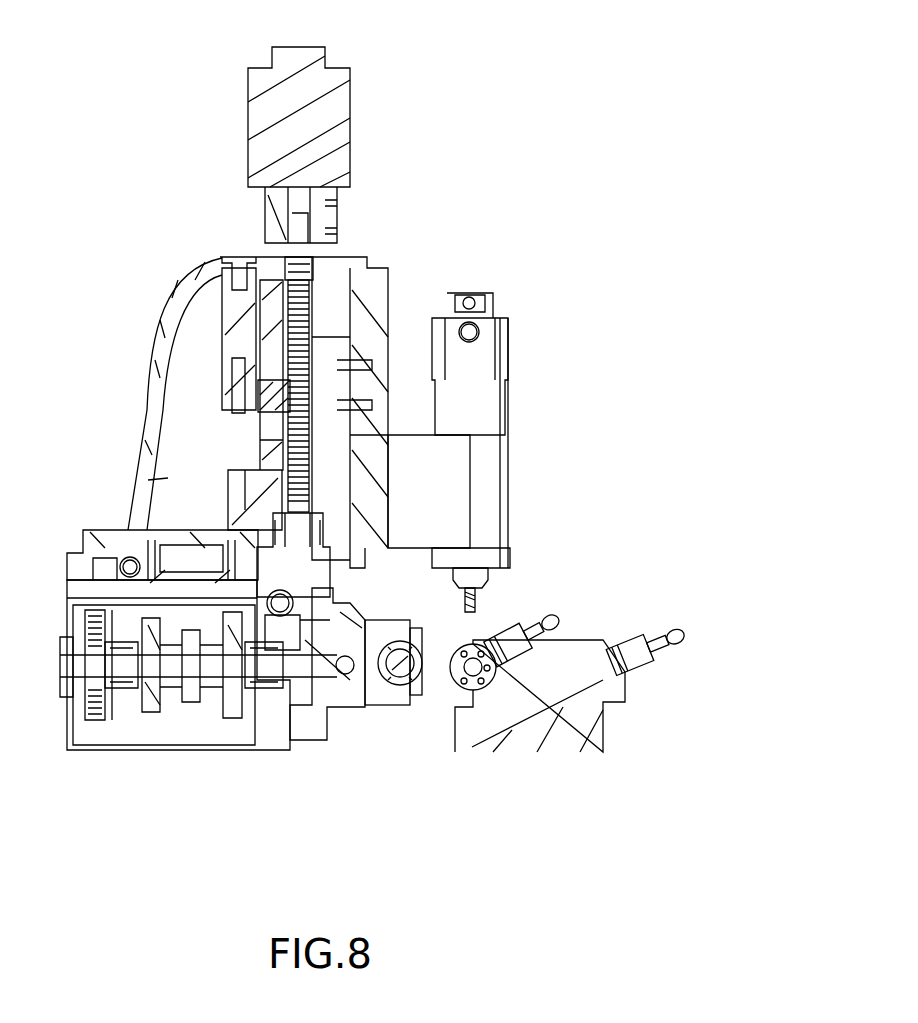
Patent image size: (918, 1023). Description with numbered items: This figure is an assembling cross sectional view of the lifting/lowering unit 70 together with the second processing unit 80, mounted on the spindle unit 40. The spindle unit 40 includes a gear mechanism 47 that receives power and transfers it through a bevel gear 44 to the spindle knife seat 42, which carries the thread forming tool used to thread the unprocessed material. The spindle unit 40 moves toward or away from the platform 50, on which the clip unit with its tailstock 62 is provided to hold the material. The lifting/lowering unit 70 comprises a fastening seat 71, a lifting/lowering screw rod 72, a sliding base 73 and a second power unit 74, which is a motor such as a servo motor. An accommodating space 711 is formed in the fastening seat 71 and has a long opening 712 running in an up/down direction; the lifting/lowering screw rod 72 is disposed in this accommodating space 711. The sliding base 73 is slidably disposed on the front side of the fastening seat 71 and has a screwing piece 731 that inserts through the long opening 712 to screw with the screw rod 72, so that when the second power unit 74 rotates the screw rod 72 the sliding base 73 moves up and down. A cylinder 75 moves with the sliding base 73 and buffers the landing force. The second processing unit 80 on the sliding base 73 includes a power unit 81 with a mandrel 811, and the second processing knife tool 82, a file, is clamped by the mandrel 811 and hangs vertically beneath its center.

The spindle unit 40 is at (360, 722).
The spindle knife seat 42 is at (398, 705).
The bevel gear 44 is at (323, 700).
The gear mechanism 47 is at (186, 722).
The platform 50 is at (575, 718).
The tailstock 62 is at (529, 682).
The lifting/lowering unit 70 is at (152, 290).
The fastening seat 71 is at (98, 533).
The lifting/lowering screw rod 72 is at (217, 310).
The sliding base 73 is at (370, 285).
The second power unit 74 is at (333, 157).
The cylinder 75 is at (243, 340).
The second processing unit 80 is at (523, 418).
The power unit 81 is at (482, 357).
The second processing knife tool 82 is at (478, 600).
The accommodating space 711 is at (393, 298).
The long opening 712 is at (345, 478).
The screwing piece 731 is at (258, 393).
The mandrel 811 is at (480, 575).